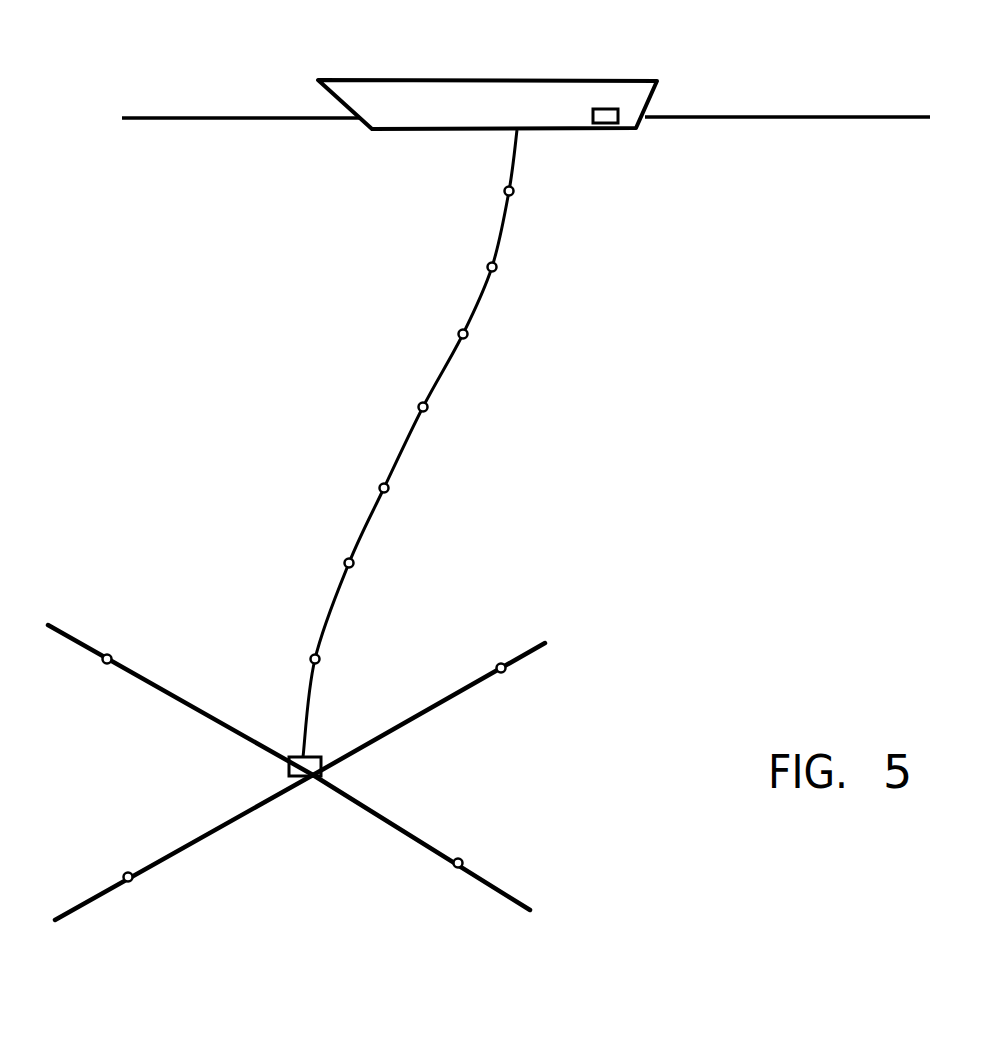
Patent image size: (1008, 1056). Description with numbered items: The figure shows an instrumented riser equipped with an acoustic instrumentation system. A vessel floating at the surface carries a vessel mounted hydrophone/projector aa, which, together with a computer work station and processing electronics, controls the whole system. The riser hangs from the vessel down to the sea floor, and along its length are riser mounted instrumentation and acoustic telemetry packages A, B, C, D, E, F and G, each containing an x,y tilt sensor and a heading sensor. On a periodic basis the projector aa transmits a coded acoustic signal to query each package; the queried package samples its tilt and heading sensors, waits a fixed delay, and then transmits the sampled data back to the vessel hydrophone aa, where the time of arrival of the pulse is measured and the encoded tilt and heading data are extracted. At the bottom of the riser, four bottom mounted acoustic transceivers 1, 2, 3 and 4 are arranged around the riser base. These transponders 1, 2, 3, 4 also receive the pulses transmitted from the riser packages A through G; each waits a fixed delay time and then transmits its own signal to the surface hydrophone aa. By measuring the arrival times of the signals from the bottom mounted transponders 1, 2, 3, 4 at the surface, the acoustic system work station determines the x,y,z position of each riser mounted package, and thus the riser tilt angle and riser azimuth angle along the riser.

The vessel mounted hydrophone/projector aa is at (620, 128).
The riser mounted instrumentation and acoustic telemetry package A is at (529, 201).
The riser mounted instrumentation and acoustic telemetry package B is at (509, 278).
The riser mounted instrumentation and acoustic telemetry package C is at (479, 344).
The riser mounted instrumentation and acoustic telemetry package D is at (438, 416).
The riser mounted instrumentation and acoustic telemetry package E is at (395, 503).
The riser mounted instrumentation and acoustic telemetry package F is at (365, 578).
The riser sensor node G is at (333, 668).
The bottom mounted acoustic transceiver 1 is at (123, 645).
The bottom mounted acoustic transceiver 2 is at (521, 689).
The bottom mounted acoustic transceiver 3 is at (142, 898).
The bottom mounted acoustic transceiver 4 is at (480, 865).